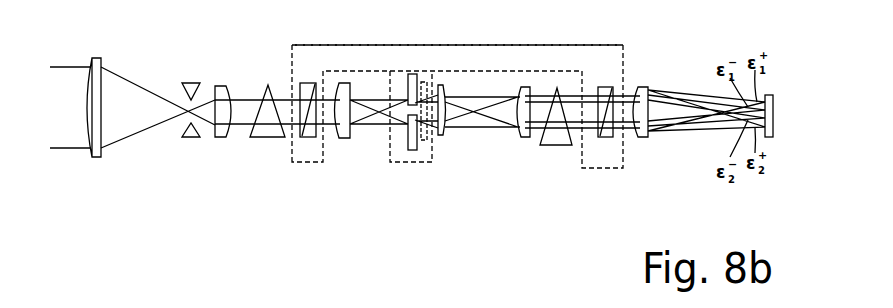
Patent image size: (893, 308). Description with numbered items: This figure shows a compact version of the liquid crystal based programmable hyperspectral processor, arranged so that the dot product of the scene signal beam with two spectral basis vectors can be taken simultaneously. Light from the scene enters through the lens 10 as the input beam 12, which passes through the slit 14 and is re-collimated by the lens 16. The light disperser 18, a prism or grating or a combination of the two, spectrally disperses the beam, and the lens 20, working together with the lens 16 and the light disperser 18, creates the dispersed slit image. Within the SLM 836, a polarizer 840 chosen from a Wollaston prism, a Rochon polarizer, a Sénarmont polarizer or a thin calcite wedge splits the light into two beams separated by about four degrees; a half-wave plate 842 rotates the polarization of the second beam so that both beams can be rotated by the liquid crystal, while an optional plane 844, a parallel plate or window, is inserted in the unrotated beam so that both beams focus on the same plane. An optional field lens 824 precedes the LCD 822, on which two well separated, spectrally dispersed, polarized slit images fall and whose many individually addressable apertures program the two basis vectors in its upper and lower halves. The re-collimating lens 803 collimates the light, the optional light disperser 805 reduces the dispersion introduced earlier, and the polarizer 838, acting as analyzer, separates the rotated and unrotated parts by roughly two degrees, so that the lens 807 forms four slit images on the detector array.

The lens 10 is at (100, 57).
The input beam 12 is at (127, 75).
The slit 14 is at (194, 82).
The lens 16 is at (228, 86).
The light disperser 18 is at (270, 83).
The lens 20 is at (347, 139).
The spatial light modulator 836 is at (348, 45).
The polarizer 840 is at (313, 138).
The half-wave plate 842 is at (413, 75).
The plane 844 is at (413, 150).
The field lens 824 is at (423, 82).
The liquid crystal 822 is at (427, 140).
The lens 803 is at (528, 87).
The light disperser 805 is at (558, 88).
The polarizer 838 is at (607, 85).
The lens 807 is at (648, 85).